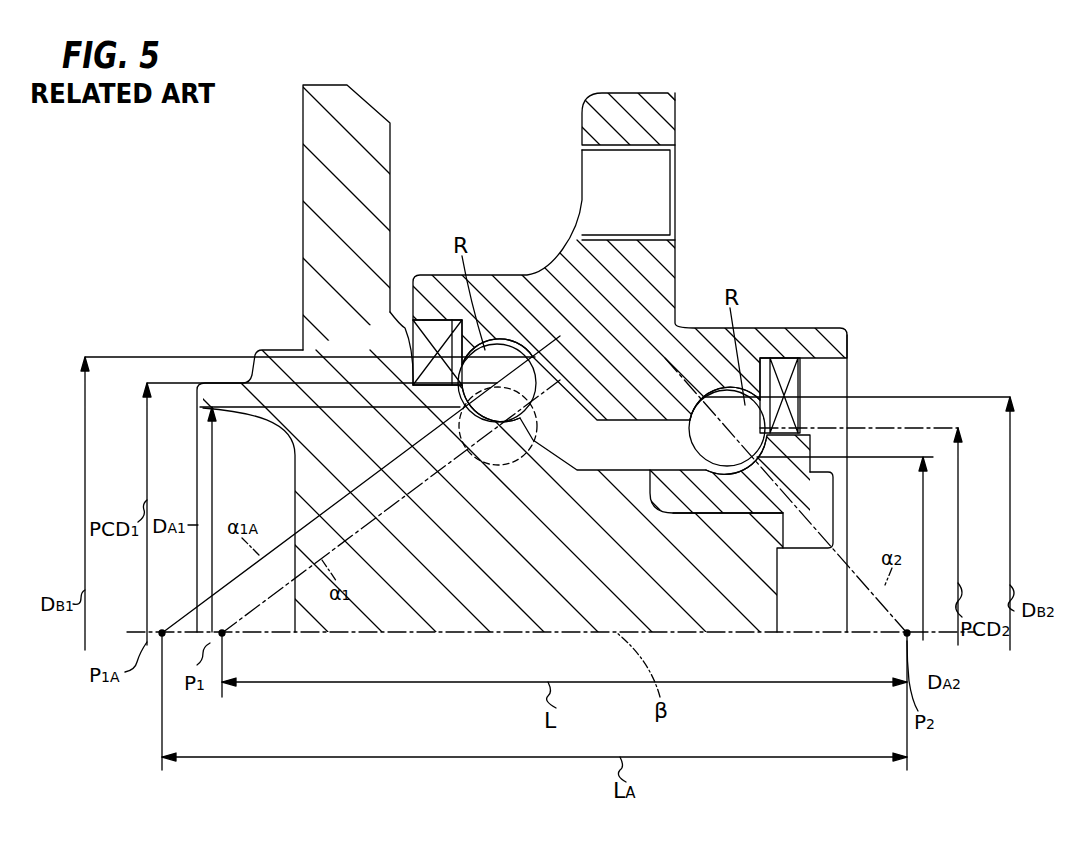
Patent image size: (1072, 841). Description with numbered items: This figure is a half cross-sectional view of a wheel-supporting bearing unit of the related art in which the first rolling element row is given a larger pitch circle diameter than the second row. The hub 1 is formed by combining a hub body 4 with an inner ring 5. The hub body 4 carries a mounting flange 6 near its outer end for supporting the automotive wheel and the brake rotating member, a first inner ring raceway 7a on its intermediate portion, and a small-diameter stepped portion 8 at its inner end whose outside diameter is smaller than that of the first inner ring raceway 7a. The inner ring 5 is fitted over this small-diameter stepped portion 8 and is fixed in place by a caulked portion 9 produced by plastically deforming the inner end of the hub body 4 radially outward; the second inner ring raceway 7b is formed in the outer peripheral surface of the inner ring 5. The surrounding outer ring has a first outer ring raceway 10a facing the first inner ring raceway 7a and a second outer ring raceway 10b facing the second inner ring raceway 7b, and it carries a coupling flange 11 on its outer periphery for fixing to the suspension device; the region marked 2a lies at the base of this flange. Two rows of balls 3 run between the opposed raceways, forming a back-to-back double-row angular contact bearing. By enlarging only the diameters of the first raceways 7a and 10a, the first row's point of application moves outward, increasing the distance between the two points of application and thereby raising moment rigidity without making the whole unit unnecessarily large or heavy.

The hub 1 is at (469, 548).
The body mounting flange of outer member 2a is at (569, 287).
The balls 3 is at (440, 335).
The hub body 4 is at (333, 398).
The inner ring 5 is at (790, 443).
The mounting flange 6 is at (318, 140).
The first inner ring raceway 7a is at (470, 425).
The second inner ring raceway 7b is at (790, 515).
The small-diameter stepped portion 8 is at (747, 517).
The caulked portion 9 is at (823, 493).
The first outer ring raceway 10a is at (500, 350).
The second outer ring raceway 10b is at (717, 390).
The coupling flange 11 is at (660, 126).